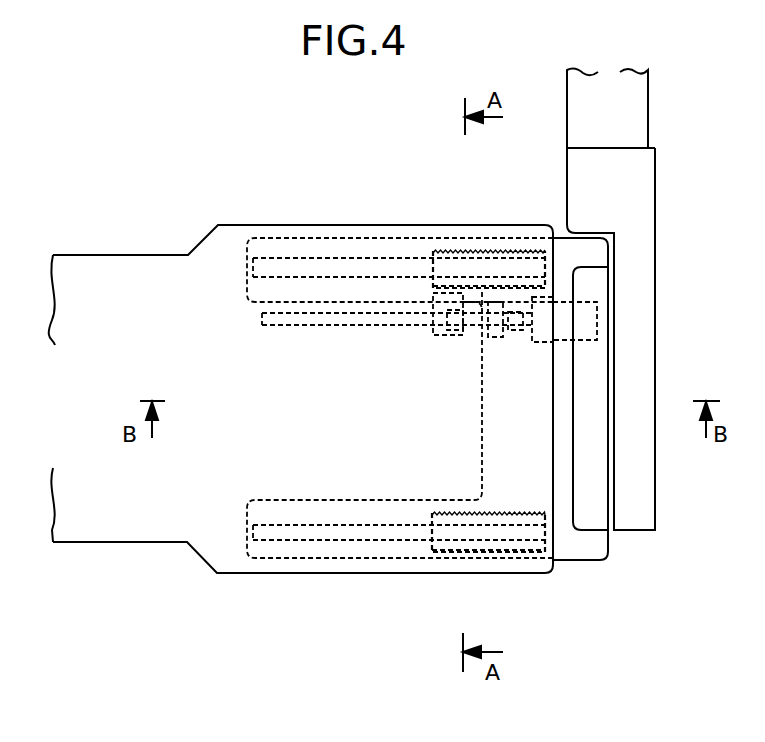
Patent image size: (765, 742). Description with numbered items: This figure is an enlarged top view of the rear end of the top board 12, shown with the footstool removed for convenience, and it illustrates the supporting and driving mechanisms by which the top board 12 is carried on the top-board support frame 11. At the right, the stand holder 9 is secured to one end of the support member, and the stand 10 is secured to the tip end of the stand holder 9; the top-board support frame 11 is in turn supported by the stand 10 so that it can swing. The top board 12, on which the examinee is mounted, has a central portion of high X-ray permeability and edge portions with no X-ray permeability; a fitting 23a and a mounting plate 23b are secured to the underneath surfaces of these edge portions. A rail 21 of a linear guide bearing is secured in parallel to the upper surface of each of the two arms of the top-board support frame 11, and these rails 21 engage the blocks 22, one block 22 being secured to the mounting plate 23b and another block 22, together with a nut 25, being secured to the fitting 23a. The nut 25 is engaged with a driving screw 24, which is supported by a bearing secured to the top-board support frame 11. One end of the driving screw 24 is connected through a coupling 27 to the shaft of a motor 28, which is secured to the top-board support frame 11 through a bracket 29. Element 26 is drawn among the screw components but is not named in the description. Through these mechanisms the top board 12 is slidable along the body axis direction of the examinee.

The stand holder 9 is at (648, 108).
The stand 10 is at (655, 205).
The top-board support frame 11 is at (572, 560).
The top board 12 is at (112, 255).
The rail 21 is at (302, 257).
The block 22 is at (443, 266).
The fitting 23a is at (433, 293).
The mounting plate 23b is at (432, 547).
The driving screw 24 is at (287, 313).
The nut 25 is at (442, 332).
The bushing 26 is at (495, 302).
The coupling 27 is at (515, 310).
The motor 28 is at (598, 313).
The bracket 29 is at (554, 348).